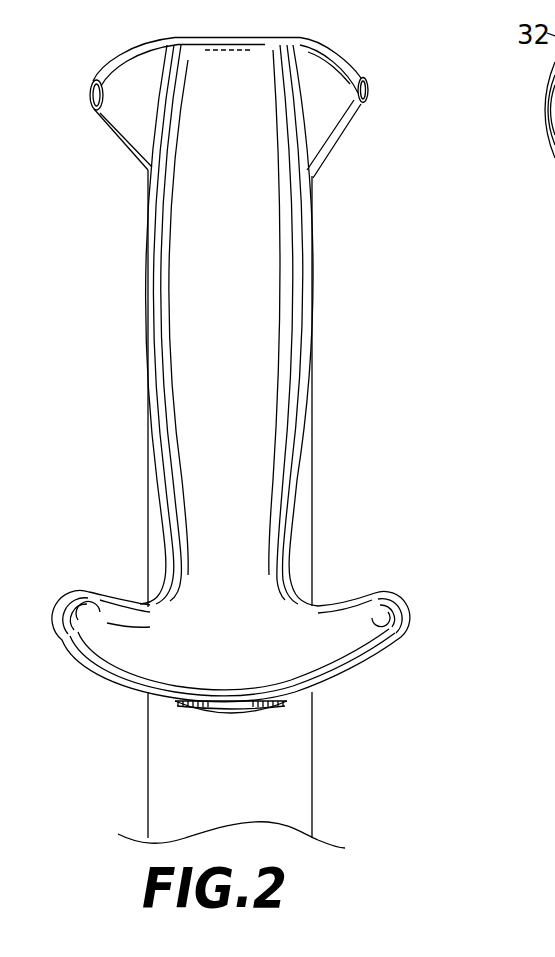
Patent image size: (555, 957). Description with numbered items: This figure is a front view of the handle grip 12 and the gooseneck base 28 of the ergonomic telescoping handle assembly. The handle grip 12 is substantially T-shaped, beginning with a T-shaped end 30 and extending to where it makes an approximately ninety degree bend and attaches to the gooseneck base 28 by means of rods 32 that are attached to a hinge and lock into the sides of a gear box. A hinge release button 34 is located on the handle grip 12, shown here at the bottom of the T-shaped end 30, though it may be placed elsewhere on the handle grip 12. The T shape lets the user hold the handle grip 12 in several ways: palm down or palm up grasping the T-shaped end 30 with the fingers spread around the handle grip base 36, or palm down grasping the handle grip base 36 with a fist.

The handle grip 12 is at (290, 38).
The gooseneck base 28 is at (356, 128).
The T-shaped end 30 is at (403, 598).
The rods 32 is at (366, 88).
The hinge release button 34 is at (233, 712).
The handle grip base 36 is at (318, 347).